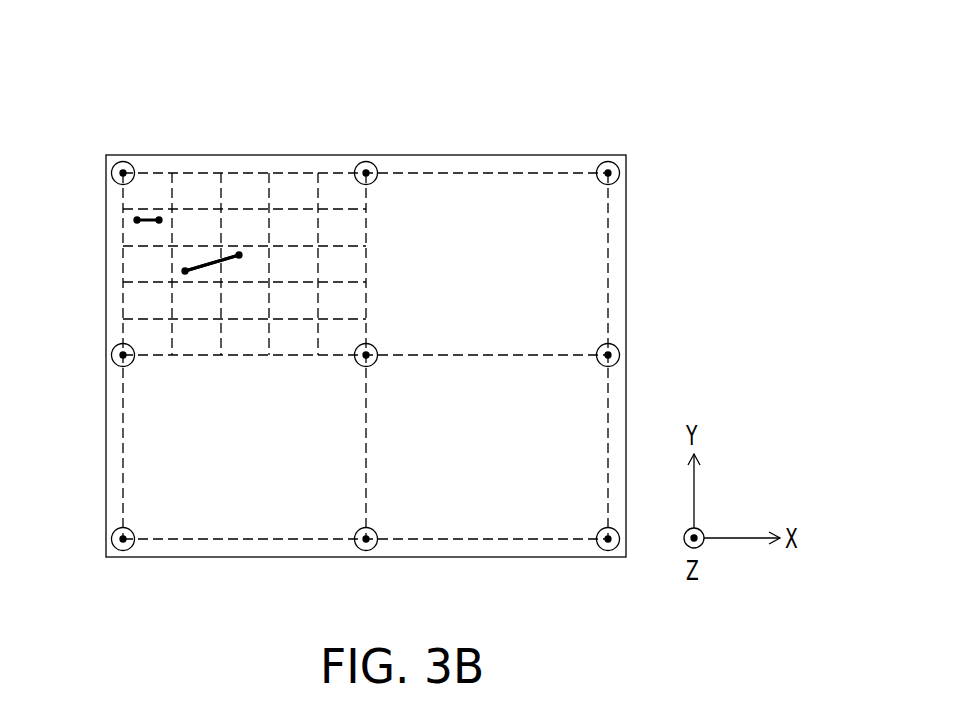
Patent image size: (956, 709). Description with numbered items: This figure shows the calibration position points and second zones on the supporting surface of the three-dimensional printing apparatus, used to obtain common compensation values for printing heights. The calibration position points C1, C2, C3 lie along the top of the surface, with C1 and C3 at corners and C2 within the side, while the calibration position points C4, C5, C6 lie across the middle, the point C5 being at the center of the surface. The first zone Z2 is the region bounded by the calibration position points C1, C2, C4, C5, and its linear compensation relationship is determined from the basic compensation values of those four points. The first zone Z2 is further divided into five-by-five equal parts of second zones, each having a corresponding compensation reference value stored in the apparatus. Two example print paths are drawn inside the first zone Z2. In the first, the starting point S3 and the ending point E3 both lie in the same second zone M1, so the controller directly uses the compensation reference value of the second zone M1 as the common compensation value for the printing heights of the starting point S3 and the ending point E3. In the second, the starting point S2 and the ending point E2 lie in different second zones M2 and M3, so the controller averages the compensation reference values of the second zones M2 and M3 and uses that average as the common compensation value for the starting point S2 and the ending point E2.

The first zone Z2 is at (246, 192).
The calibration position point C1 is at (118, 165).
The calibration position point C2 is at (367, 163).
The calibration position point C3 is at (609, 162).
The calibration position point C4 is at (118, 346).
The calibration position point C5 is at (374, 347).
The calibration position point C6 is at (616, 347).
The second zone M1 is at (148, 237).
The second zone M2 is at (185, 254).
The second zone M3 is at (256, 264).
The starting point S3 is at (138, 219).
The ending point E3 is at (160, 219).
The starting point S2 is at (185, 273).
The ending point E2 is at (239, 257).